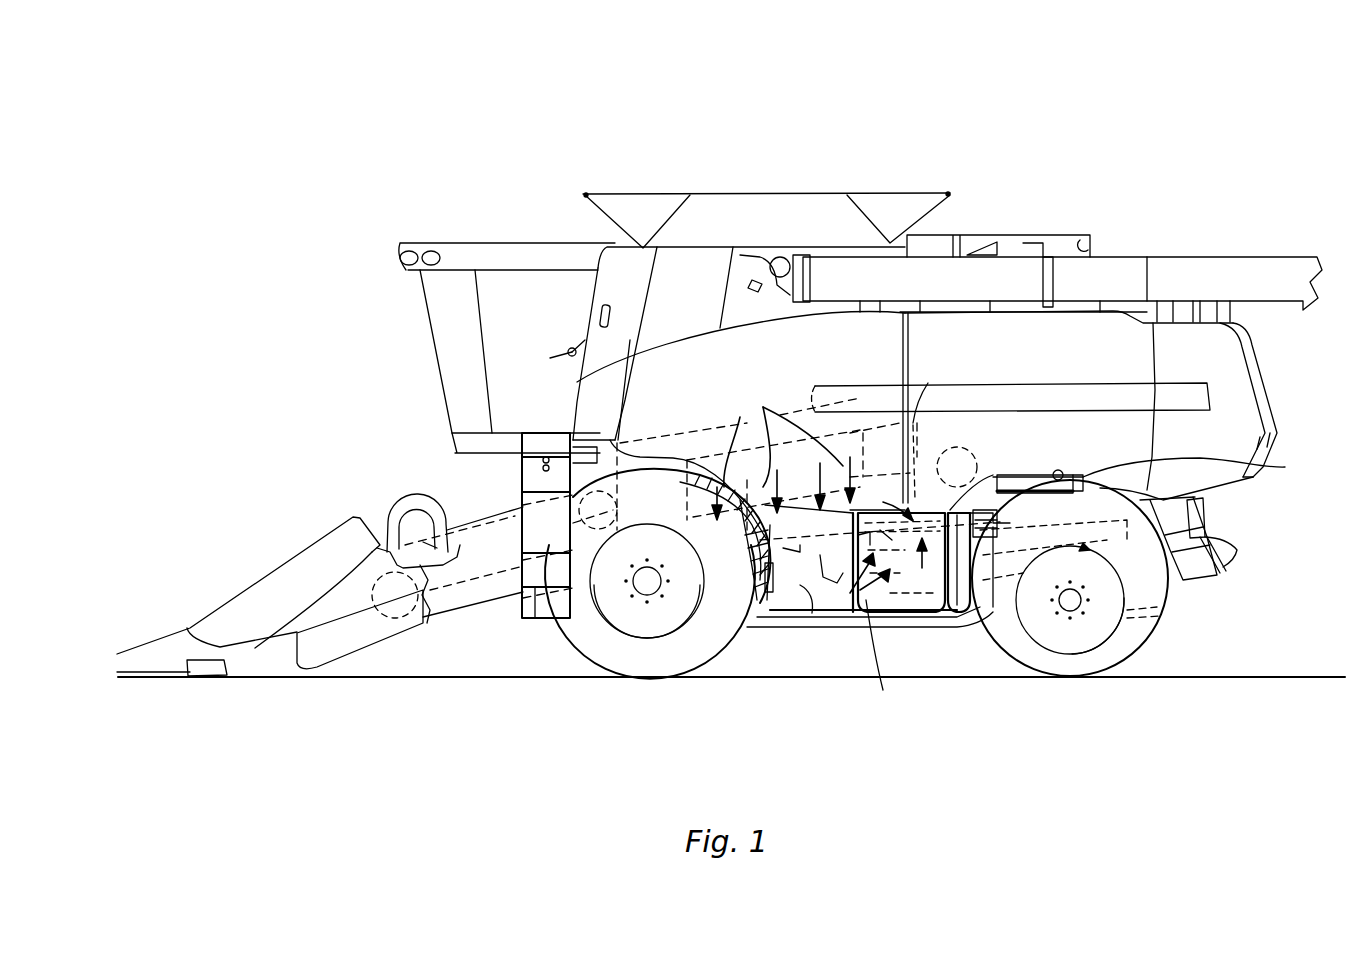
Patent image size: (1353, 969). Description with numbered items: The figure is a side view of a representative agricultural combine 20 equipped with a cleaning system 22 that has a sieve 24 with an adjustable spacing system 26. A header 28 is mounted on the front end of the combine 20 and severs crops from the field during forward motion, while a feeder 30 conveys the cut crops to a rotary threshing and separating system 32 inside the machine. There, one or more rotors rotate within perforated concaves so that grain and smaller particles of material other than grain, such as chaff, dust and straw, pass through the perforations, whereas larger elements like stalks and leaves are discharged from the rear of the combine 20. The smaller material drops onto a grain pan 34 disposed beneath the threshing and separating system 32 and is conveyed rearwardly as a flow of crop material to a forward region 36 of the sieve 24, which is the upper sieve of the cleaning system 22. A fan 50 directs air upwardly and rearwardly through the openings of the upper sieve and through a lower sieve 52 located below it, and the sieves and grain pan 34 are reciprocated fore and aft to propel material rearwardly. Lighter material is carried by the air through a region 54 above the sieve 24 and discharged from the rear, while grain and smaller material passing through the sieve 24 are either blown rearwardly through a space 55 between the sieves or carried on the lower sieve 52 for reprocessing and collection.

The agricultural combine 20 is at (1068, 137).
The cleaning system 22 is at (938, 627).
The sieve 24 is at (1285, 467).
The adjustable spacing system 26 is at (1000, 635).
The header 28 is at (245, 583).
The feeder 30 is at (428, 624).
The rotary threshing and separating system 32 is at (693, 433).
The grain pan 34 is at (733, 537).
The forward region 36 is at (980, 502).
The fan 50 is at (800, 583).
The lower sieve 52 is at (1090, 550).
The region 54 is at (977, 503).
The space 55 is at (1037, 540).